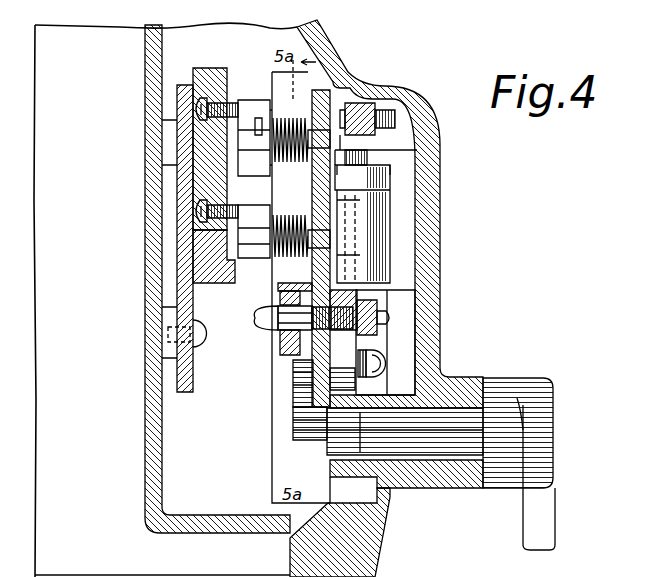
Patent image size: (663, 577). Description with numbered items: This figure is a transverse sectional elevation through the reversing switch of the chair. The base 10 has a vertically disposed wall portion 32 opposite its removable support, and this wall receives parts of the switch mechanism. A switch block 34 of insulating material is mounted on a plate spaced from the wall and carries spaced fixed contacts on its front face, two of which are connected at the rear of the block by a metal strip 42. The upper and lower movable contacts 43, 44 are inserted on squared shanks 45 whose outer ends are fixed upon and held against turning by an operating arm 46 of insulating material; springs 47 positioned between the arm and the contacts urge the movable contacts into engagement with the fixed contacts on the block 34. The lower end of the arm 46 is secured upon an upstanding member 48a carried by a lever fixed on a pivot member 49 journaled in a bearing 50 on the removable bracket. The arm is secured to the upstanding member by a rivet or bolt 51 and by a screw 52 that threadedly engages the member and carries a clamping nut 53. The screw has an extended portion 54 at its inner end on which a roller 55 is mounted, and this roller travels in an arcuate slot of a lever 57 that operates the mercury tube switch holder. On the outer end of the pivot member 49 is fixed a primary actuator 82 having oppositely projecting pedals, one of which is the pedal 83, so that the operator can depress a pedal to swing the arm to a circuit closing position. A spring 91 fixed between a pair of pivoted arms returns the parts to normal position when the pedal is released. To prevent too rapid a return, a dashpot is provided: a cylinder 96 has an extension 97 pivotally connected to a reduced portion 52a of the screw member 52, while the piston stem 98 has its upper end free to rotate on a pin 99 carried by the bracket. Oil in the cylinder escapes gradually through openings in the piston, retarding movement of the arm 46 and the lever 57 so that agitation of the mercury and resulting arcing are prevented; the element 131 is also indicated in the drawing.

The base 10 is at (372, 542).
The wall portion 32 is at (160, 432).
The switch block 34 is at (192, 262).
The metal strip 42 is at (205, 205).
The upper movable contact 43 is at (253, 106).
The lower movable contact 44 is at (257, 220).
The squared shank 45 is at (290, 118).
The operating arm 46 is at (352, 80).
The spring 47 is at (310, 140).
The upstanding member 48a is at (335, 346).
The pivot member 49 is at (422, 445).
The bearing 50 is at (474, 483).
The rivet or bolt 51 is at (300, 392).
The screw 52 is at (300, 362).
The reduced portion 52a is at (360, 315).
The clamping nut 53 is at (282, 340).
The extended portion 54 is at (258, 317).
The roller 55 is at (282, 298).
The lever 57 is at (280, 287).
The primary actuator 82 is at (537, 380).
The pedal 83 is at (556, 505).
The spring 91 is at (386, 363).
The cylinder 96 is at (385, 246).
The extension 97 is at (400, 291).
The stem 98 is at (417, 153).
The pin 99 is at (400, 97).
The bore 131 is at (420, 226).